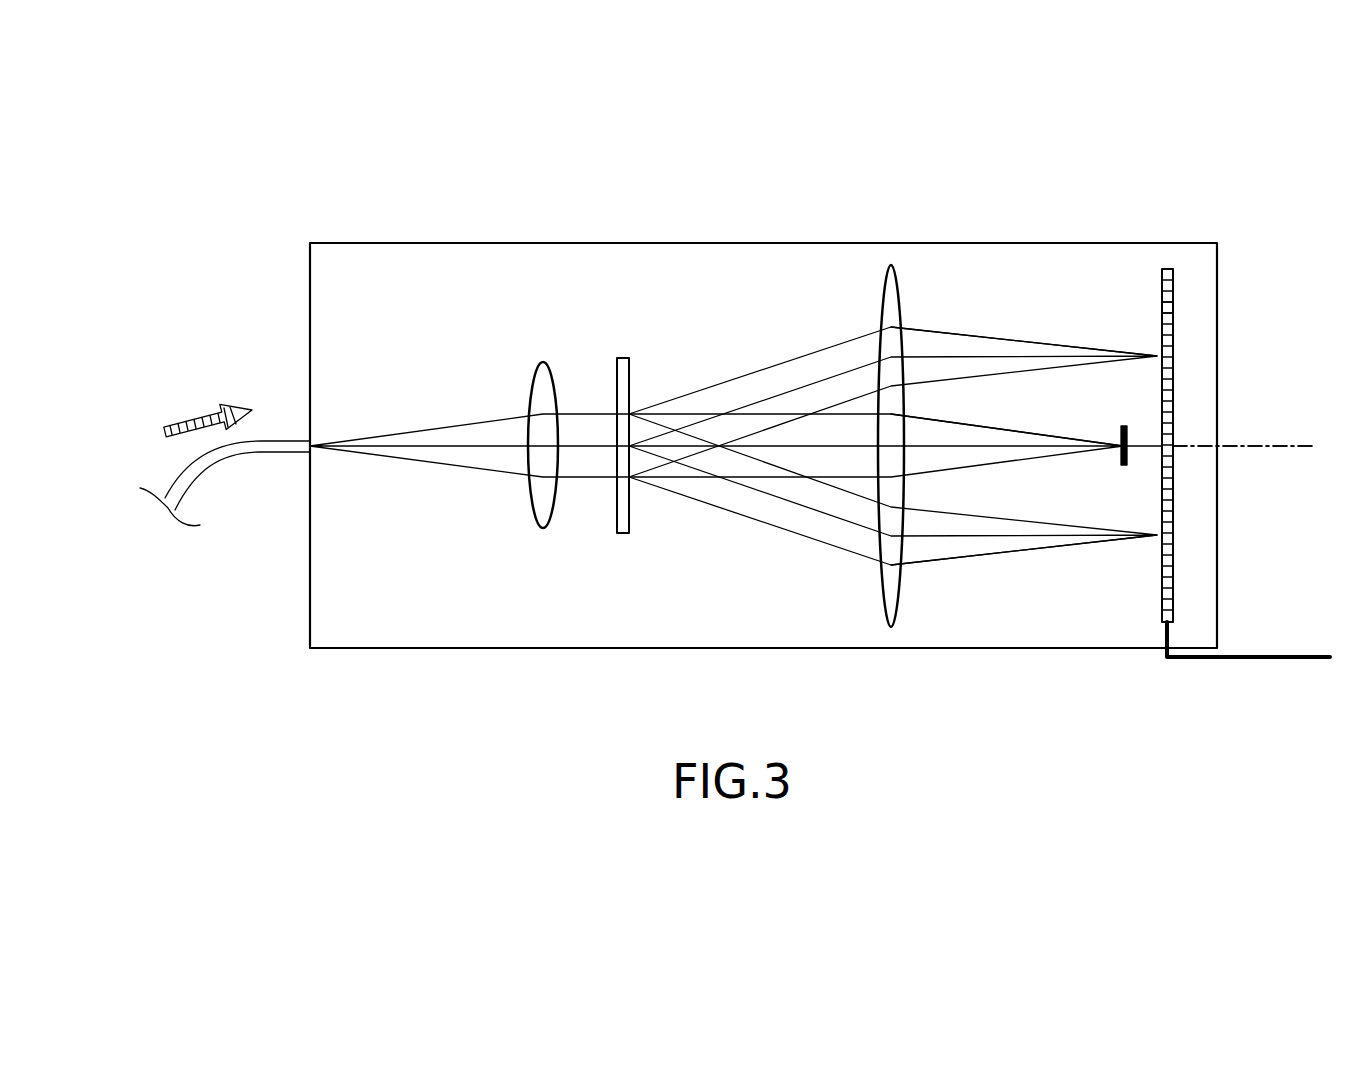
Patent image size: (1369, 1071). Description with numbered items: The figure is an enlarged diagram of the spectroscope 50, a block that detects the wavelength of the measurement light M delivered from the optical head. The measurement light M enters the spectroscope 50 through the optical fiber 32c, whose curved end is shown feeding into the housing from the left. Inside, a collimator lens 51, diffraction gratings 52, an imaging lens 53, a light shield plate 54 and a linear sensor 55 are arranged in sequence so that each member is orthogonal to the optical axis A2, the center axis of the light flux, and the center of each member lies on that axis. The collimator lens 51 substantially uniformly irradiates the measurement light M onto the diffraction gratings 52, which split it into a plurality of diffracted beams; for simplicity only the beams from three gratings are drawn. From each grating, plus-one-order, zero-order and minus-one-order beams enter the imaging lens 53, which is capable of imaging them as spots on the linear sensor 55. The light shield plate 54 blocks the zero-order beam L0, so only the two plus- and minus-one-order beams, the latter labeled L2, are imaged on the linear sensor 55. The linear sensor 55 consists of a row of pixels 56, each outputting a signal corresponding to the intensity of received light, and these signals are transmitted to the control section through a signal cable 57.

The spectroscope 50 is at (762, 196).
The collimator lens 51 is at (543, 362).
The diffraction gratings 52 is at (620, 358).
The imaging lens 53 is at (890, 266).
The light shield plate 54 is at (1124, 426).
The linear sensor 55 is at (1173, 377).
The pixel 56 is at (1173, 305).
The signal cable 57 is at (1278, 657).
The optical fiber 32c is at (243, 452).
The measurement light M is at (208, 409).
The 0-order diffracted light beam L0 is at (1058, 437).
The −1-order diffracted light beam L2 is at (1040, 548).
The optical axis A2 is at (1290, 446).